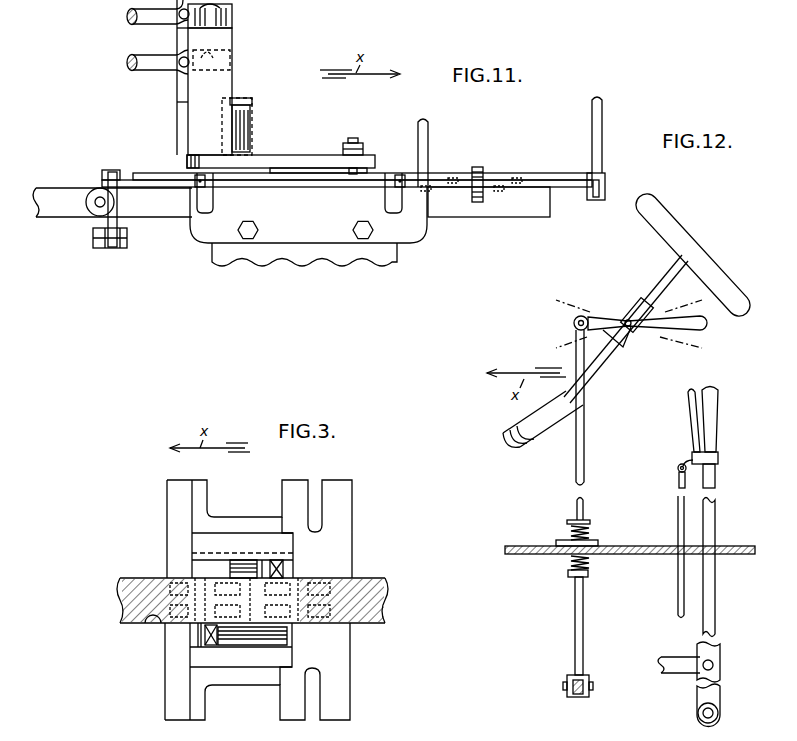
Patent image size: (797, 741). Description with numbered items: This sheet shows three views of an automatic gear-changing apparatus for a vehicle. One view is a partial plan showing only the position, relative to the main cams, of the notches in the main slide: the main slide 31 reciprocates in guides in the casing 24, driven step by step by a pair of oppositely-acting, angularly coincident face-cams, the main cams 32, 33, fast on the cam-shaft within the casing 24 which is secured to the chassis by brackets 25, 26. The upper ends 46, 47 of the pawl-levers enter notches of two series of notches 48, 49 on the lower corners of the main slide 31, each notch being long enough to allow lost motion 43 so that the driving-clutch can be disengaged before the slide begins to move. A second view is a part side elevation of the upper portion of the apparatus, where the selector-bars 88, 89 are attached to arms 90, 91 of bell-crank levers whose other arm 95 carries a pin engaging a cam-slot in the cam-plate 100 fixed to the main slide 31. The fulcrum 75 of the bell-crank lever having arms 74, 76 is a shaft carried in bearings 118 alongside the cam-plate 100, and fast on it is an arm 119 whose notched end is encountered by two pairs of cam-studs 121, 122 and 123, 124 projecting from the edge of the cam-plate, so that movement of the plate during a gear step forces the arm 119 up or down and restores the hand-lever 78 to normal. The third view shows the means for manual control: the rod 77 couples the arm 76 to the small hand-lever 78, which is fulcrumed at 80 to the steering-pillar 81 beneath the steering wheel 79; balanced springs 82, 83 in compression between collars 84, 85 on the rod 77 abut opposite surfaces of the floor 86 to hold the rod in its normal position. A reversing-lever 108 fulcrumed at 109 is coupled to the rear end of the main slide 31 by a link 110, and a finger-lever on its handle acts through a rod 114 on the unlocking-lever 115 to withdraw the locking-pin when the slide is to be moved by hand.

In FIG. 11, the casing 24 is at (330, 256).
In FIG. 3, the casing 24 is at (343, 654).
In FIG. 11, the bracket 25 is at (428, 128).
In FIG. 11, the bracket 26 is at (177, 112).
In FIG. 11, the main slide 31 is at (155, 218).
In FIG. 3, the main slide 31 is at (133, 578).
In FIG. 3, the main cam 32 is at (215, 553).
In FIG. 3, the main cam 33 is at (272, 553).
In FIG. 3, the lost motion 43 is at (258, 590).
In FIG. 3, the upper end of pawl-lever 46 is at (205, 637).
In FIG. 3, the upper end of pawl-lever 47 is at (284, 568).
In FIG. 3, the notches 48 is at (151, 621).
In FIG. 3, the notches 49 is at (345, 580).
In FIG. 11, the arm of bell-crank lever 74 is at (113, 248).
In FIG. 11, the fulcrum 75 is at (294, 192).
In FIG. 11, the arm of bell-crank lever 76 is at (596, 201).
In FIG. 12, the arm of bell-crank lever 76 is at (578, 697).
In FIG. 11, the rod 77 is at (592, 137).
In FIG. 12, the rod 77 is at (585, 432).
In FIG. 12, the hand-lever 78 is at (705, 330).
In FIG. 12, the steering wheel 79 is at (680, 232).
In FIG. 12, the fulcrum of hand-lever 80 is at (628, 320).
In FIG. 12, the steering-pillar 81 is at (536, 440).
In FIG. 12, the balanced spring 82 is at (571, 537).
In FIG. 12, the balanced spring 83 is at (570, 562).
In FIG. 12, the collar 84 is at (572, 519).
In FIG. 12, the collar 85 is at (568, 576).
In FIG. 12, the floor 86 is at (523, 545).
In FIG. 11, the selector-bar 88 is at (127, 14).
In FIG. 11, the selector-bar 89 is at (127, 62).
In FIG. 11, the arm of bell-crank lever 90 is at (232, 18).
In FIG. 11, the arm of bell-crank lever 91 is at (230, 64).
In FIG. 11, the arm of bell-crank lever 95 is at (302, 155).
In FIG. 11, the cam-plate 100 is at (160, 172).
In FIG. 12, the reversing-lever 108 is at (716, 420).
In FIG. 12, the fulcrum of reversing-lever 109 is at (697, 712).
In FIG. 11, the link 110 is at (62, 218).
In FIG. 12, the link 110 is at (666, 668).
In FIG. 12, the rod 114 is at (678, 587).
In FIG. 12, the unlocking-lever 115 is at (689, 410).
In FIG. 11, the bearings 118 is at (201, 214).
In FIG. 11, the arm 119 is at (478, 204).
In FIG. 11, the cam-stud 121 is at (517, 177).
In FIG. 11, the cam-stud 122 is at (452, 177).
In FIG. 11, the cam-stud 123 is at (499, 193).
In FIG. 11, the cam-stud 124 is at (426, 193).